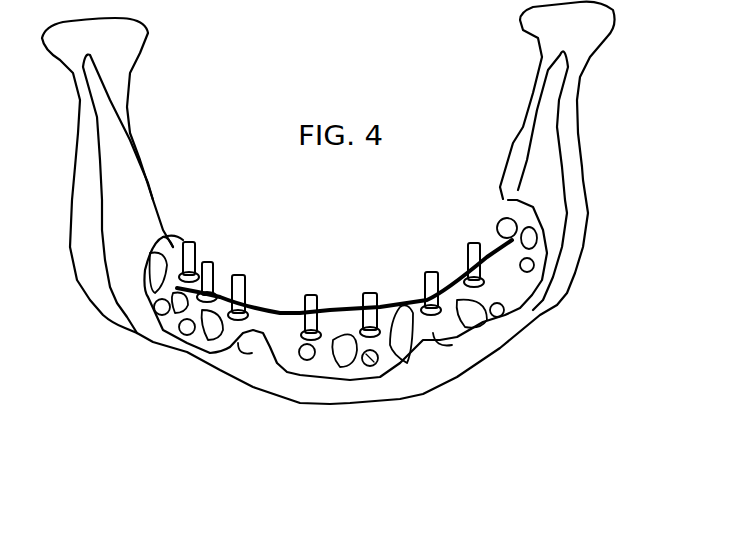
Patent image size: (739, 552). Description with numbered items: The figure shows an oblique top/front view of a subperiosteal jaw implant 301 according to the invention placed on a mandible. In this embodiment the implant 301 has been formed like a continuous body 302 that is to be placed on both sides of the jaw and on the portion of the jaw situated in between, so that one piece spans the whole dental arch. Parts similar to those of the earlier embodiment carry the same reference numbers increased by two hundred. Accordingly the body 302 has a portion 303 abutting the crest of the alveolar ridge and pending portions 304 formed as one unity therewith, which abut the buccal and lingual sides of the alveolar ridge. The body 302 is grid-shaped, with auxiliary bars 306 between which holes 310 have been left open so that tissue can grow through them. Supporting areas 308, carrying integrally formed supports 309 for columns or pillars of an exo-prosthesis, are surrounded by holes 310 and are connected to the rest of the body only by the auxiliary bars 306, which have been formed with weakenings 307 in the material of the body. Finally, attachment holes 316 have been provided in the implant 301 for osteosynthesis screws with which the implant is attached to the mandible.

The subperiosteal jaw implant 301 is at (270, 225).
The body 302 is at (415, 343).
The portion abutting the crest of the alveolar ridge 303 is at (457, 285).
The pending portions 304 is at (543, 255).
The auxiliary bars 306 is at (273, 345).
The weakenings 307 is at (313, 357).
The supporting areas 308 is at (407, 385).
The supports 309 is at (318, 290).
The holes 310 is at (333, 365).
The attachment holes 316 is at (338, 322).